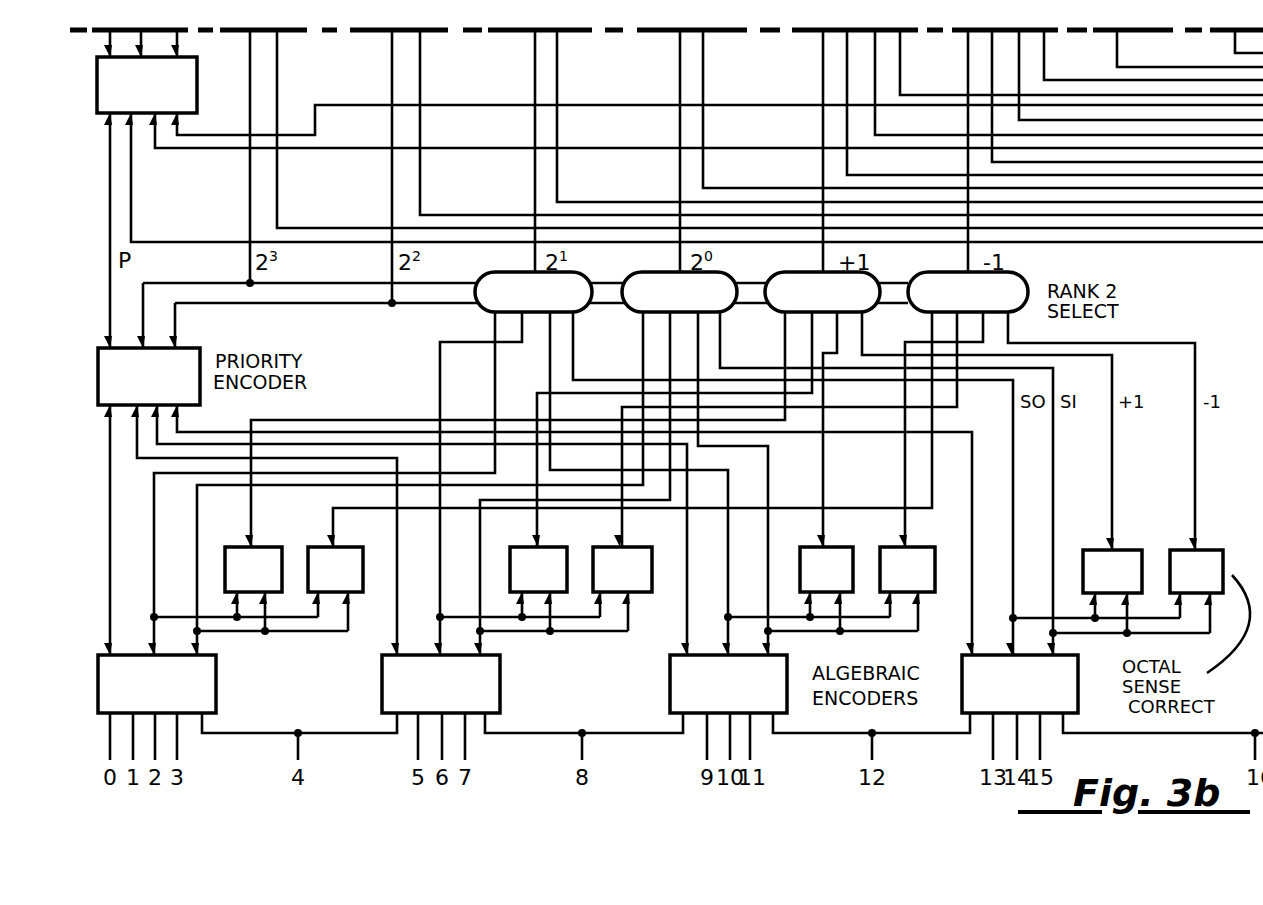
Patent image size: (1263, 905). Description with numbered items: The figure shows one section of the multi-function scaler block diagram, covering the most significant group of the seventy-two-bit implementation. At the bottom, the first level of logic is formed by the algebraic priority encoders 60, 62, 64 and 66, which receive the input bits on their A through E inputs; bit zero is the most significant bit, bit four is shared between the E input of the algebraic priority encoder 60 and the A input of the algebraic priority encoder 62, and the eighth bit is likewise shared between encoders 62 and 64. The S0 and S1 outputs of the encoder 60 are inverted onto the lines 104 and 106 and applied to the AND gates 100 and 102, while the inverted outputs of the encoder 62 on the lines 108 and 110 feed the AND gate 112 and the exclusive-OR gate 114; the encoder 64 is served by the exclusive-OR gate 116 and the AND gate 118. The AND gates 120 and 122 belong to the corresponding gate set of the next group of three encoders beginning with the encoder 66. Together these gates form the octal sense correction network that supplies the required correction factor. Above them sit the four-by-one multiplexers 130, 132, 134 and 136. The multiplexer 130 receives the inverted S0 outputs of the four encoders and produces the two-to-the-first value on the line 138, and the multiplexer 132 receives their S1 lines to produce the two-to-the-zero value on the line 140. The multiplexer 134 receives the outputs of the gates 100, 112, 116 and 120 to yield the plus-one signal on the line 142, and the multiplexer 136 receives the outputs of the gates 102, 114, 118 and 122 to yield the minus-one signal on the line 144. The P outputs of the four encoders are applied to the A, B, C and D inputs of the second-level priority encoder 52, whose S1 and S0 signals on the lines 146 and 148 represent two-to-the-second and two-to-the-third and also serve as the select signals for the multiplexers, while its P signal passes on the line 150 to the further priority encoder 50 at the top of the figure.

The priority encoder 50 is at (97, 88).
The priority encoder 52 is at (97, 375).
The algebraic priority encoder 60 is at (98, 680).
The algebraic priority encoder 62 is at (500, 678).
The algebraic priority encoder 64 is at (787, 695).
The algebraic priority encoder 66 is at (1078, 695).
The AND gate 100 is at (268, 547).
The AND gate 102 is at (340, 547).
The line 104 is at (220, 618).
The line 106 is at (317, 635).
The line 108 is at (505, 618).
The line 110 is at (603, 635).
The AND gate 112 is at (548, 547).
The exclusive-OR gate 114 is at (630, 547).
The exclusive-OR gate 116 is at (833, 547).
The AND gate 118 is at (912, 547).
The AND gate 120 is at (1128, 549).
The AND gate 122 is at (1212, 549).
The four-by-one multiplexer 130 is at (512, 272).
The four-by-one multiplexer 132 is at (662, 272).
The four-by-one multiplexer 134 is at (805, 272).
The four-by-one multiplexer 136 is at (952, 272).
The line 138 is at (533, 52).
The line 140 is at (680, 52).
The line 142 is at (823, 52).
The line 144 is at (968, 52).
The line 146 is at (228, 303).
The line 148 is at (233, 282).
The line 150 is at (110, 230).